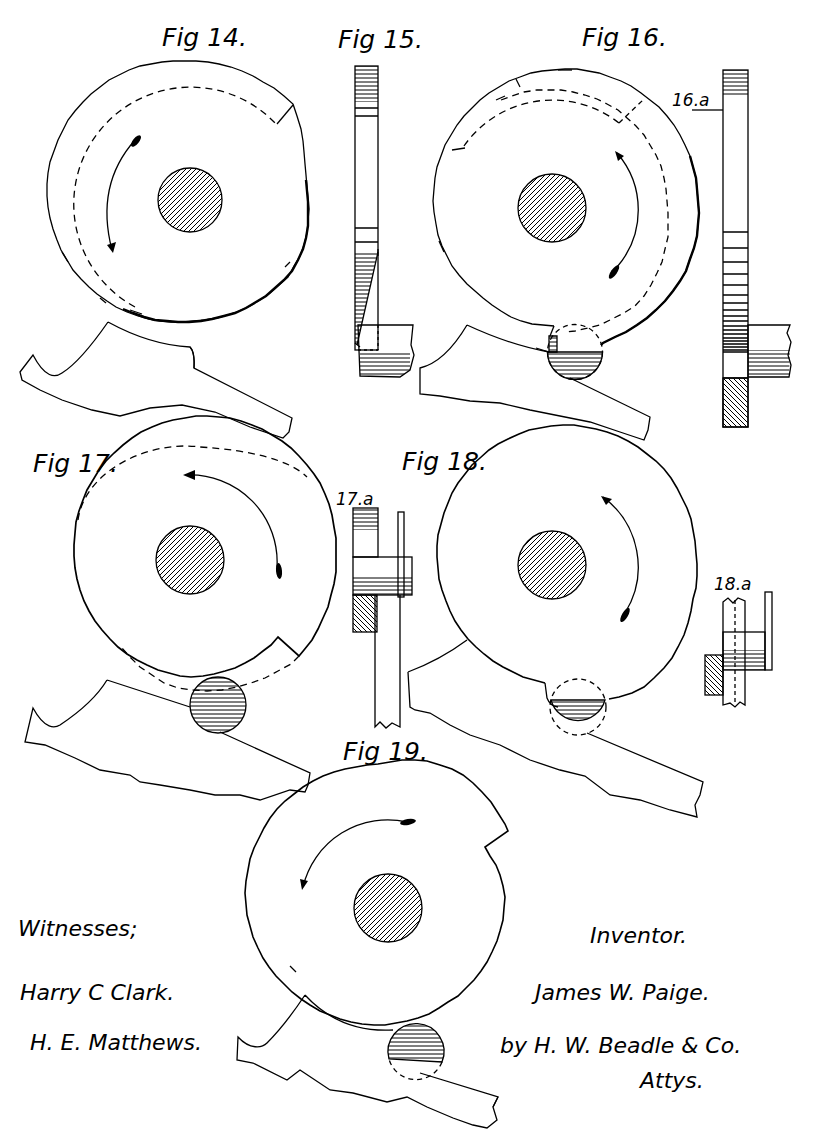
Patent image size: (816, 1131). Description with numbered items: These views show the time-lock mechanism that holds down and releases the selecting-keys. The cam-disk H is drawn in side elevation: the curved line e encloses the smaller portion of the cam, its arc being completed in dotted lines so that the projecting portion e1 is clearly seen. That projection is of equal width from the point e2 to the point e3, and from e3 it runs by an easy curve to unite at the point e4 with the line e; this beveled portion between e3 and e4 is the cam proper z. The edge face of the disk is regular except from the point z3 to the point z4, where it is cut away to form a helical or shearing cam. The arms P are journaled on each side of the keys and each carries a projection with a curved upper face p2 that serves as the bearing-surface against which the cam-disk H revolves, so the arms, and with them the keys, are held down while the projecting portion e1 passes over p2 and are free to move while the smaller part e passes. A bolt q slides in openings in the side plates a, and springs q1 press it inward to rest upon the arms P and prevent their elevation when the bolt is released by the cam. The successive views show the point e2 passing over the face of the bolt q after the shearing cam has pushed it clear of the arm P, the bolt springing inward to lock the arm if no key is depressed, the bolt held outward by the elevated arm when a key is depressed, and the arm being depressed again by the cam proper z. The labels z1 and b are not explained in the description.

In FIG. 14, the cam-disk H is at (178, 191).
In FIG. 15, the cam-disk H is at (380, 216).
In FIG. 16, the cam-disk H is at (566, 207).
In FIG. 16A, the cam-disk H is at (750, 222).
In FIG. 14, the curved line inclosing the smaller portion of the cam e is at (286, 268).
In FIG. 16, the curved line inclosing the smaller portion of the cam e is at (441, 248).
In FIG. 14, the projecting portion e1 is at (145, 197).
In FIG. 16, the projecting portion e1 is at (696, 243).
In FIG. 14, the point e2 is at (293, 106).
In FIG. 16, the point e2 is at (568, 339).
In FIG. 14, the point e3 is at (64, 259).
In FIG. 16, the point e3 is at (566, 69).
In FIG. 14, the point e4 is at (138, 309).
In FIG. 16, the point e4 is at (500, 98).
In FIG. 16, the cam proper z is at (511, 75).
In FIG. 14, the zone z' z1 is at (100, 299).
In FIG. 15, the point z3 is at (380, 253).
In FIG. 16, the point z3 is at (639, 102).
In FIG. 15, the point z4 is at (357, 348).
In FIG. 16, the point z4 is at (527, 126).
In FIG. 19, the point z4 is at (287, 974).
In FIG. 14, the arm P is at (156, 380).
In FIG. 16, the arm P is at (535, 382).
In FIG. 16A, the arm P is at (723, 405).
In FIG. 17, the arm P is at (167, 740).
In FIG. 17A, the arm P is at (357, 629).
In FIG. 14, the curved upper face p2 is at (194, 348).
In FIG. 16, the curved upper face p2 is at (552, 337).
In FIG. 15, the bolt q is at (386, 351).
In FIG. 16, the bolt q is at (584, 352).
In FIG. 16A, the bolt q is at (769, 351).
In FIG. 17A, the bolt q is at (412, 590).
In FIG. 18A, the bolt q is at (744, 652).
In FIG. 17A, the spring q1 is at (405, 530).
In FIG. 18A, the spring q1 is at (771, 632).
In FIG. 17A, the side plate a is at (387, 661).
In FIG. 19, the part b is at (500, 1090).